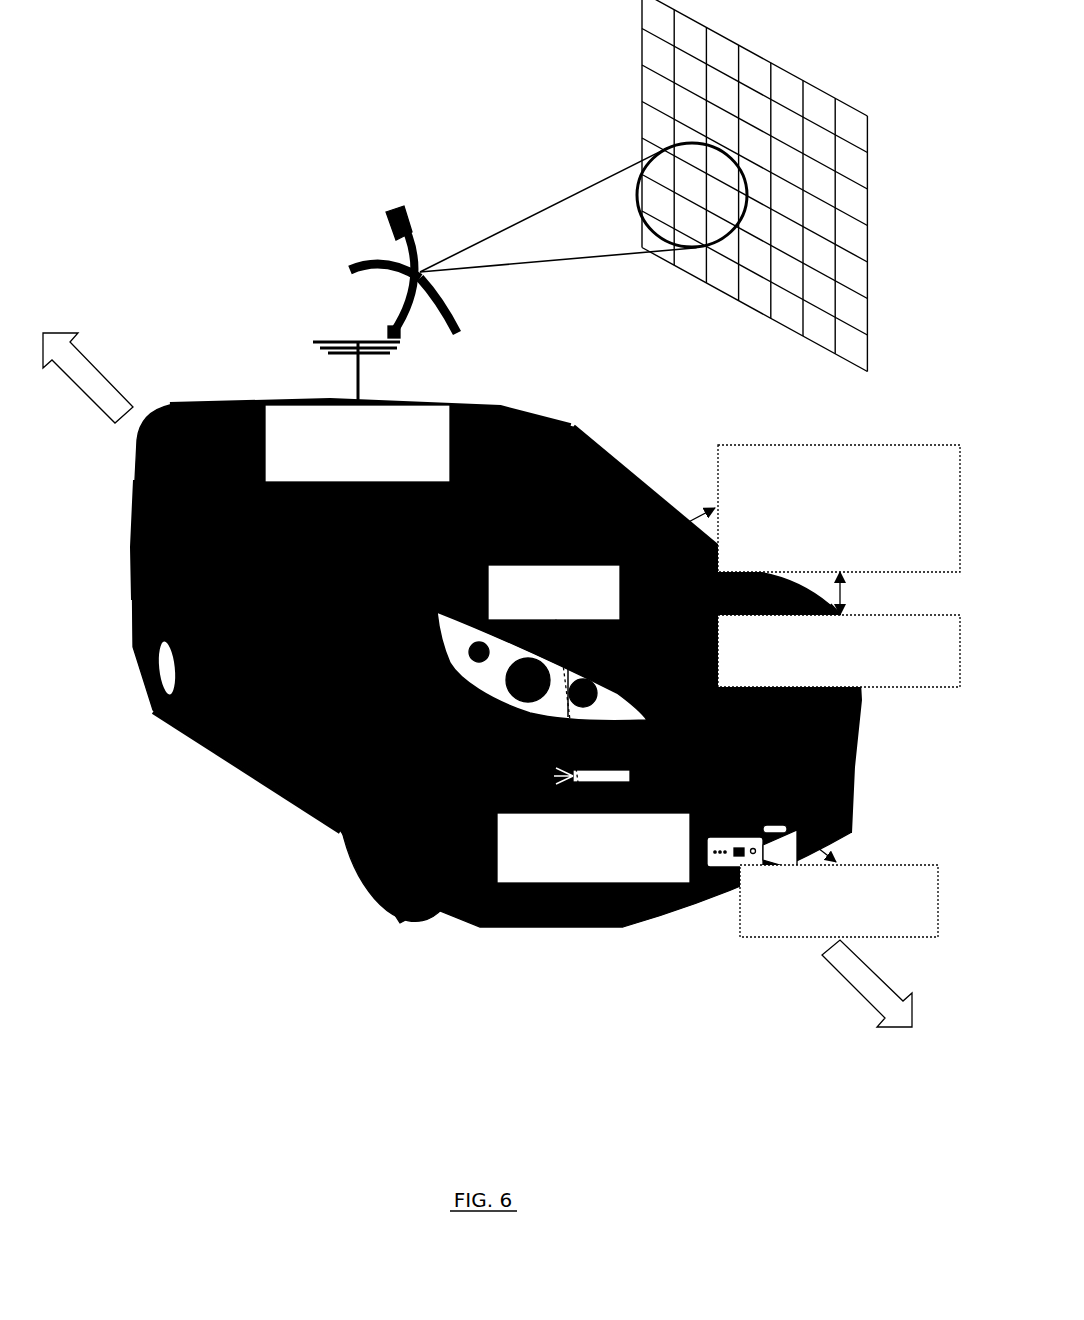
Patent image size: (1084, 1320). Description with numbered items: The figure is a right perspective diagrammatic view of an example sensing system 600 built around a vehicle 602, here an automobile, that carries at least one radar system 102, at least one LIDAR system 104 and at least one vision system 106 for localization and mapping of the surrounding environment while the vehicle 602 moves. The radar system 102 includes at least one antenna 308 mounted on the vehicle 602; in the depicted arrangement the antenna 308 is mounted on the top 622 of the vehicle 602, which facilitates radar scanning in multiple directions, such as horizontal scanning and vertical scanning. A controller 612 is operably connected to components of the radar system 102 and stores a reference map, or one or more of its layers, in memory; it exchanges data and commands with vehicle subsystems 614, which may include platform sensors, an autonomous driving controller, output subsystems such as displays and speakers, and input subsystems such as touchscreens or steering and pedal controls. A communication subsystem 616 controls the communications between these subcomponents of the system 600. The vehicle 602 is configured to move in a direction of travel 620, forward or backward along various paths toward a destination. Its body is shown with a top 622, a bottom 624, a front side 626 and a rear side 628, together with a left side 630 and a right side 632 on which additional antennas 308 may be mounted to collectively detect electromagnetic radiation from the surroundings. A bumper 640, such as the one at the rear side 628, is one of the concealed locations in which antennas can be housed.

The sensing system 600 is at (501, 536).
The vehicle 602 is at (622, 421).
The antenna 308 is at (355, 383).
The radar system 102 is at (339, 470).
The controller 612 is at (536, 616).
The communication subsystem 616 is at (821, 544).
The vehicle subsystems 614 is at (821, 675).
The LIDAR system 104 is at (575, 871).
The vision system 106 is at (821, 926).
The direction of travel 620 is at (107, 378).
The top 622 is at (523, 404).
The left side 630 is at (660, 495).
The rear side 628 is at (132, 553).
The bumper 640 is at (133, 657).
The right side 632 is at (238, 743).
The front side 626 is at (857, 730).
The bottom 624 is at (306, 829).